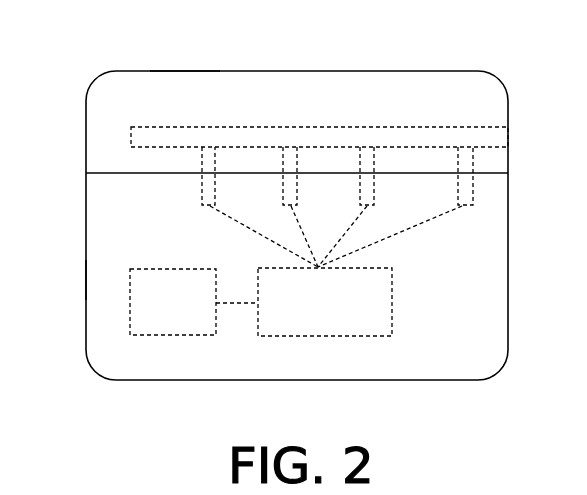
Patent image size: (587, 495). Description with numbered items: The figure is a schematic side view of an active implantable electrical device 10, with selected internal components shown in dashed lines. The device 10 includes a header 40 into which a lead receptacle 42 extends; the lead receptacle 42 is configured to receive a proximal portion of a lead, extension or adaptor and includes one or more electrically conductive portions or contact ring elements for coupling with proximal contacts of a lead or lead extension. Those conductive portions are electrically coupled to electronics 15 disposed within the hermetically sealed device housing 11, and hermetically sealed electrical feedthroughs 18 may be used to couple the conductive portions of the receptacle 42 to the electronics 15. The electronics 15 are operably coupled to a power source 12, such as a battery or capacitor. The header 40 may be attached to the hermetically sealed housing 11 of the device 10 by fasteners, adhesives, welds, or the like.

The active implantable electrical device 10 is at (453, 361).
The hermetically sealed device housing 11 is at (86, 302).
The power source 12 is at (186, 314).
The electronics 15 is at (339, 315).
The hermetically sealed electrical feedthroughs 18 is at (473, 188).
The header 40 is at (183, 70).
The lead receptacle 42 is at (313, 134).